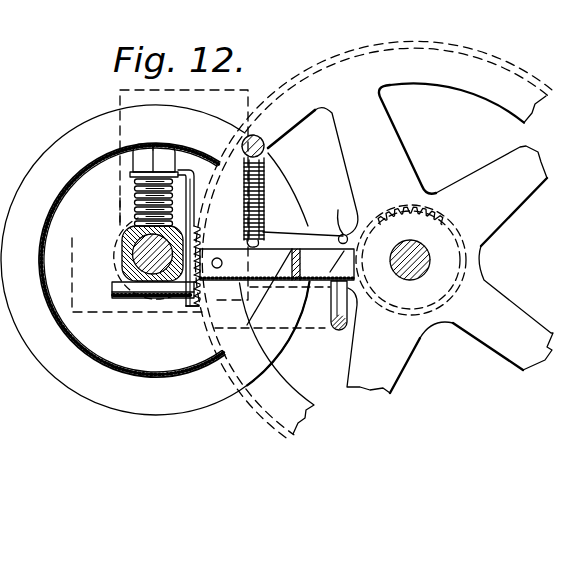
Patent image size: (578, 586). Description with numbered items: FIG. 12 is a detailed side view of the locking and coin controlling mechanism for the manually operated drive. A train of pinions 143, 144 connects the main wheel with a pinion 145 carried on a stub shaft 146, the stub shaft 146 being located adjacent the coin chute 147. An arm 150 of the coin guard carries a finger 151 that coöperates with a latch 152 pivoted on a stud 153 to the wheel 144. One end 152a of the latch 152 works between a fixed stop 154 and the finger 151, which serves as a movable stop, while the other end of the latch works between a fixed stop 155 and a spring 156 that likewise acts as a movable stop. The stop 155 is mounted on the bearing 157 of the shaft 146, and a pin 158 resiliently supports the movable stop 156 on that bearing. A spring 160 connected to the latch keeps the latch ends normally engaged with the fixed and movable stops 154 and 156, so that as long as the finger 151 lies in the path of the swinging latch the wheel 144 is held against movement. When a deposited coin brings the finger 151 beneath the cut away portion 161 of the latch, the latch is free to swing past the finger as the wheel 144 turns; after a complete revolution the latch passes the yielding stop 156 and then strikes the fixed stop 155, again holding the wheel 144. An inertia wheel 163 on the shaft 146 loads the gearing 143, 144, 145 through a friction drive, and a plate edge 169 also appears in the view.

The pinion 143 is at (419, 203).
The wheel 144 is at (484, 38).
The pinion 145 is at (195, 232).
The stub shaft 146 is at (143, 283).
The coin chute 147 is at (120, 98).
The arm of the coin guard 150 is at (333, 310).
The finger 151 is at (400, 306).
The latch 152 is at (277, 256).
The end of the latch 152a is at (351, 249).
The stud 153 is at (218, 268).
The fixed stop 154 is at (313, 176).
The fixed stop 155 is at (188, 307).
The spring 156 is at (197, 215).
The bearing 157 is at (120, 258).
The pin 158 is at (135, 193).
The spring 160 is at (266, 178).
The cut away portion 161 is at (272, 289).
The inertia wheel 163 is at (77, 382).
The plate edge 169 is at (122, 212).